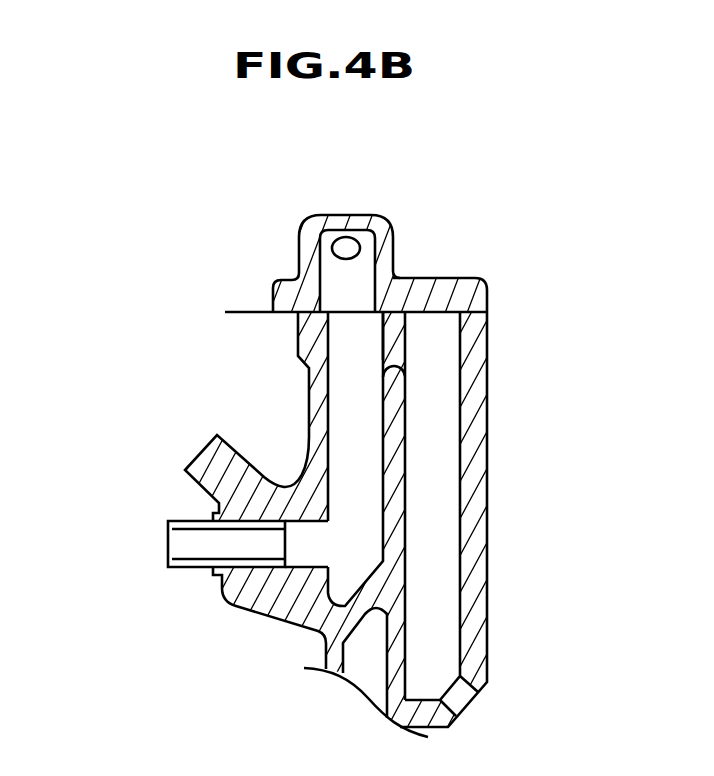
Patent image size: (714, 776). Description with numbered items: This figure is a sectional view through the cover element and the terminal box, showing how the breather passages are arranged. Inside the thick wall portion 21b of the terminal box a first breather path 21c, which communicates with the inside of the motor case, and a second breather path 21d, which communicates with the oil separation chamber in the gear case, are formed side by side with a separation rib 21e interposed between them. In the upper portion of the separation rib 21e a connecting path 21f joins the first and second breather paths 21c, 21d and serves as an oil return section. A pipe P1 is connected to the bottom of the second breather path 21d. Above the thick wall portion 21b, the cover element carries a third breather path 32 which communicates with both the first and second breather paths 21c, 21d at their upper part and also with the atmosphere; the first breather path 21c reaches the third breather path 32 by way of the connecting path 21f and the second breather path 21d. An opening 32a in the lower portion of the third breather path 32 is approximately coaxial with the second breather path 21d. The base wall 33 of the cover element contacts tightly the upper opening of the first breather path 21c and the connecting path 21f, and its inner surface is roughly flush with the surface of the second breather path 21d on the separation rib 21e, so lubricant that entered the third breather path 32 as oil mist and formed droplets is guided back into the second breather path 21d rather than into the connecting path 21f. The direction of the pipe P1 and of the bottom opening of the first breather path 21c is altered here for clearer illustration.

The third breather path 32 is at (342, 244).
The opening 32a is at (335, 297).
The base wall 33 is at (411, 293).
The thick wall portion 21b is at (460, 577).
The first breather path 21c is at (438, 500).
The second breather path 21d is at (348, 447).
The separation rib 21e is at (397, 443).
The connecting path 21f is at (393, 337).
The pipe P1 is at (182, 522).